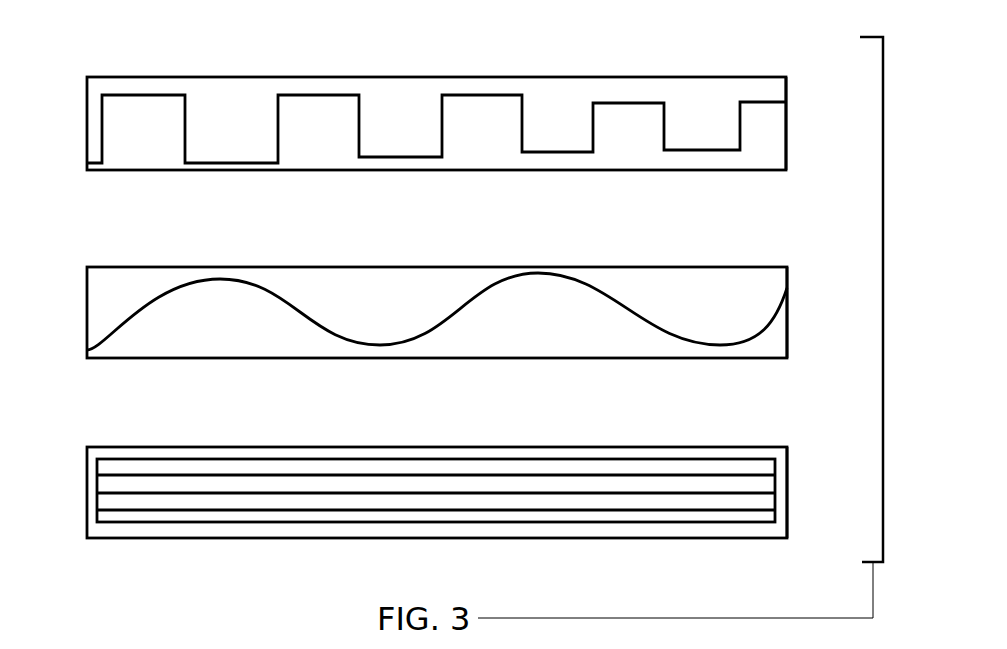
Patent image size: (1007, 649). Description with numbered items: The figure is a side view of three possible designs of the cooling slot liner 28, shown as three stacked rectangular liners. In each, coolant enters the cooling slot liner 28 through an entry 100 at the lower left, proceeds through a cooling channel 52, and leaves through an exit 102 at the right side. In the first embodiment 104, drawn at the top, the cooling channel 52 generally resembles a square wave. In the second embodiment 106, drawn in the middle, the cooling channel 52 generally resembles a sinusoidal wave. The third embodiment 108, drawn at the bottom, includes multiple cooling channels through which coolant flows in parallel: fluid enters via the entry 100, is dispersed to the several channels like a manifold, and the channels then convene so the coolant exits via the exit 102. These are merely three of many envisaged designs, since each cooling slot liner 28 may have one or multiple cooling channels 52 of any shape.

The cooling slot liner 28 is at (228, 77).
The cooling channel 52 is at (476, 308).
The entry 100 is at (399, 287).
The exit 102 is at (787, 95).
The first embodiment 104 is at (787, 141).
The second embodiment 106 is at (787, 325).
The third embodiment 108 is at (787, 478).